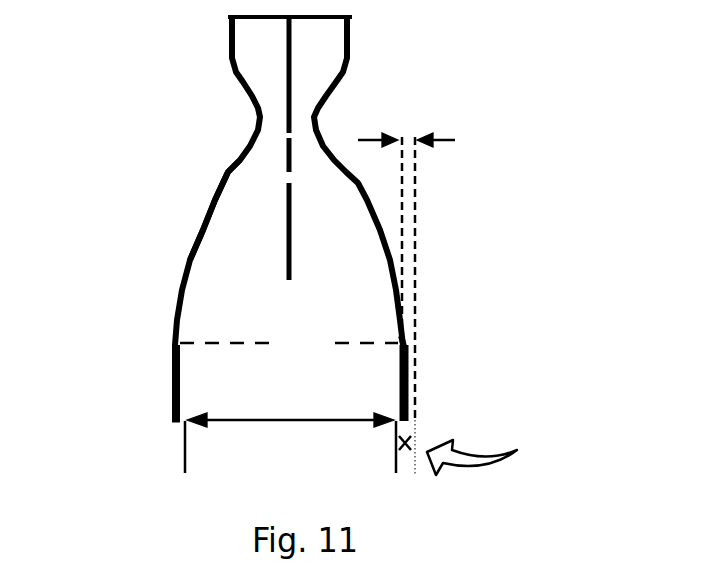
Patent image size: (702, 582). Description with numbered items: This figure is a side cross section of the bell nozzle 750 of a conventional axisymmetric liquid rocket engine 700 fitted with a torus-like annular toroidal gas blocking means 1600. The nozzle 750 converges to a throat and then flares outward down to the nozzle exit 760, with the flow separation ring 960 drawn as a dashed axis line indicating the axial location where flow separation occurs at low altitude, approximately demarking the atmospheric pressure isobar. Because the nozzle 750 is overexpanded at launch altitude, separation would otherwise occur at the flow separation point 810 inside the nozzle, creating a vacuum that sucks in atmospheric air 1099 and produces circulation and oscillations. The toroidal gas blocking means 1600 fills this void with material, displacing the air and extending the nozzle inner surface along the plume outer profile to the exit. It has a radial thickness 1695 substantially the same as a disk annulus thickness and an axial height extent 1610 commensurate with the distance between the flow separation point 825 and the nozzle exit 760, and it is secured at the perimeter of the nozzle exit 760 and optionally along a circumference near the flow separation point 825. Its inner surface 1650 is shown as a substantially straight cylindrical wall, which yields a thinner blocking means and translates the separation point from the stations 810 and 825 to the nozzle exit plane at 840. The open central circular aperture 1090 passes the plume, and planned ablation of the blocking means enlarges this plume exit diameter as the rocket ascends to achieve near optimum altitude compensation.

The liquid rocket engine 700 is at (228, 30).
The nozzle 750 is at (222, 173).
The nozzle exit 760 is at (176, 426).
The flow separation point 810 is at (388, 250).
The flow separation point 825 is at (402, 340).
The nozzle exit plane 840 is at (397, 418).
The flow separation ring 960 is at (367, 340).
The central circular aperture 1090 is at (298, 424).
The atmospheric air 1099 is at (503, 449).
The toroidal gas blocking means 1600 is at (172, 403).
The axial height extent 1610 is at (430, 347).
The inner surface 1650 is at (215, 344).
The radial thickness 1695 is at (410, 128).